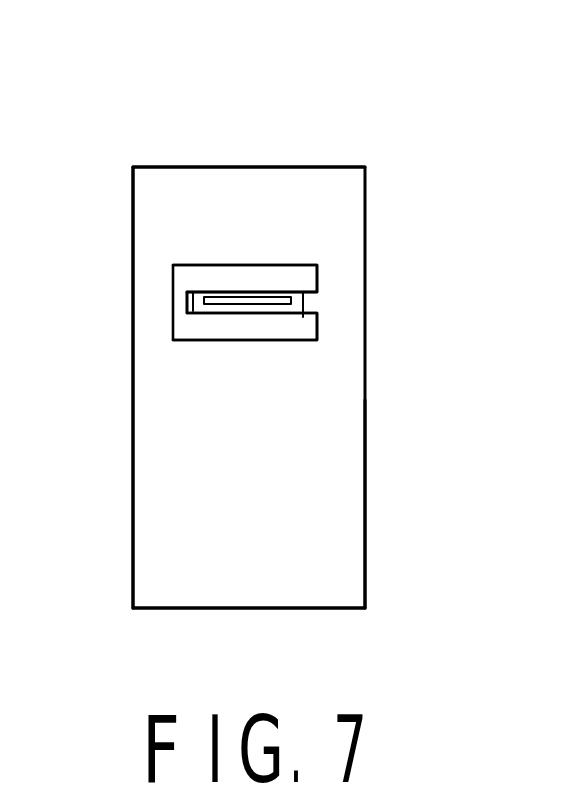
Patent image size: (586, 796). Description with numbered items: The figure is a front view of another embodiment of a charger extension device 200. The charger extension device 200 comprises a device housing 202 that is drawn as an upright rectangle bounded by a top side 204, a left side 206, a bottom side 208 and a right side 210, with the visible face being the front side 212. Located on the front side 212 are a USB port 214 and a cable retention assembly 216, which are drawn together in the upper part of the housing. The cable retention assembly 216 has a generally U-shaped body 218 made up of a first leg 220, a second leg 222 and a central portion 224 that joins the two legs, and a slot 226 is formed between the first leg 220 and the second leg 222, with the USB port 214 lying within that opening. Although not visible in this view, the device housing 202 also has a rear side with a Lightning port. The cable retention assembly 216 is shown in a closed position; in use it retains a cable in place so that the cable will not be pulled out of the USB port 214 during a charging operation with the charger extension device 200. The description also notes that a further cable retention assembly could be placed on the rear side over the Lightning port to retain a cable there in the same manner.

The charger extension device 200 is at (270, 107).
The device housing 202 is at (440, 203).
The top side 204 is at (172, 167).
The left side 206 is at (132, 482).
The bottom side 208 is at (207, 610).
The right side 210 is at (365, 438).
The front side 212 is at (340, 525).
The USB port 214 is at (303, 301).
The cable retention assembly 216 is at (223, 350).
The U-shaped body 218 is at (225, 283).
The first leg 220 is at (308, 272).
The second leg 222 is at (300, 328).
The central portion 224 is at (186, 303).
The slot 226 is at (257, 300).